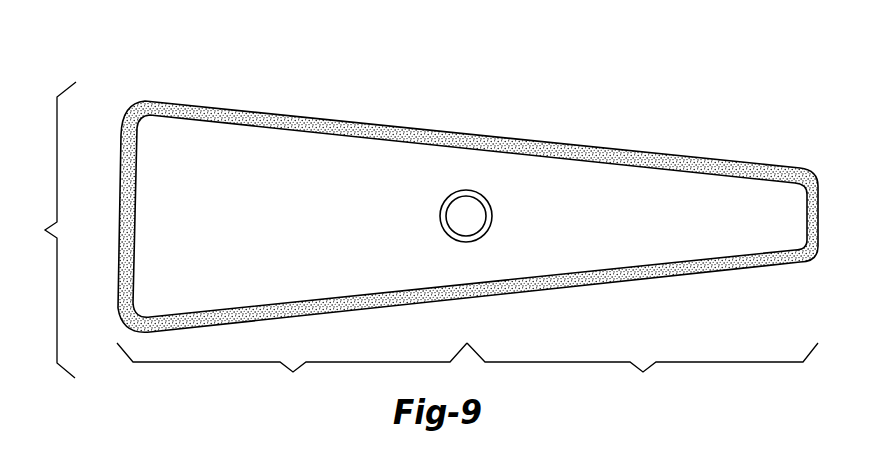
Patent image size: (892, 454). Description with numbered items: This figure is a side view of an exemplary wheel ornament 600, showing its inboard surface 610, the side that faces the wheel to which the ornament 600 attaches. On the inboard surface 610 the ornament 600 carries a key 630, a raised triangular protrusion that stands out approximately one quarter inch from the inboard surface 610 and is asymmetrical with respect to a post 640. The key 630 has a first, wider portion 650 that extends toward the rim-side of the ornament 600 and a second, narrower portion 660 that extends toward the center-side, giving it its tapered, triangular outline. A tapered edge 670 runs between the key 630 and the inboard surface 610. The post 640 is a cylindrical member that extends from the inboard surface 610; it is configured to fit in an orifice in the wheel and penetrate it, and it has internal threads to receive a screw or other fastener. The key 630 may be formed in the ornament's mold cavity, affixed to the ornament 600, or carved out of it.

The ornament 600 is at (43, 230).
The inboard surface 610 is at (209, 104).
The key 630 is at (325, 150).
The post 640 is at (492, 218).
The first, wider portion 650 is at (292, 372).
The second, narrower portion 660 is at (642, 372).
The tapered edge 670 is at (663, 160).